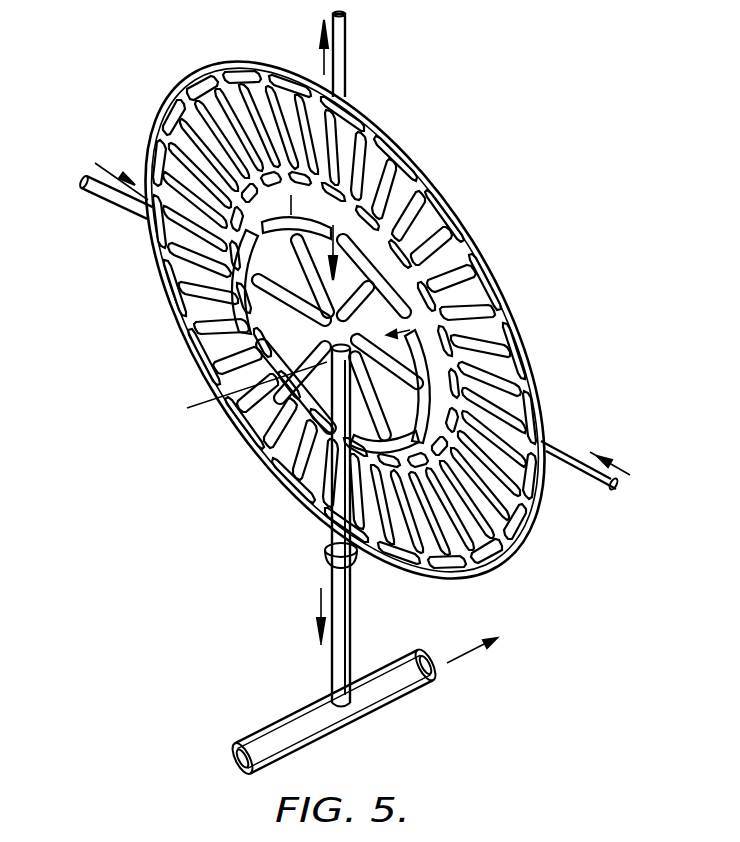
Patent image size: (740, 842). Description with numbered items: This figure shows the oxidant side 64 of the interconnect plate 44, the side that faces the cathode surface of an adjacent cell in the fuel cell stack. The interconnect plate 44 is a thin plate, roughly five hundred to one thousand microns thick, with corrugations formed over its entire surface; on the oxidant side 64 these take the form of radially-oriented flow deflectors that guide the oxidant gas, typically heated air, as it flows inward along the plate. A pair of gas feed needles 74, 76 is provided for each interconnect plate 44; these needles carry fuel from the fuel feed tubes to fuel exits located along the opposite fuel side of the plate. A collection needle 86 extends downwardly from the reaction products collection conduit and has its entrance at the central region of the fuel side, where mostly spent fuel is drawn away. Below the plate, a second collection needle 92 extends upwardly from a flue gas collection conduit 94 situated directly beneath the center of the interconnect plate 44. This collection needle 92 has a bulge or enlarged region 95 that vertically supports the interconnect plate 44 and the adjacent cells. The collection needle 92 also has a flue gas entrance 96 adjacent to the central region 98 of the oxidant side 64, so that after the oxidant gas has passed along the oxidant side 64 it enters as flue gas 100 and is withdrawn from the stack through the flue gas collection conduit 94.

The interconnect plate 44 is at (498, 250).
The oxidant side 64 is at (275, 473).
The gas feed needle 74 is at (97, 193).
The gas feed needle 76 is at (548, 440).
The collection needle 86 is at (348, 75).
The collection needle 92 is at (352, 620).
The flue gas collection conduit 94 is at (400, 694).
The enlarged region 95 is at (326, 558).
The flue gas entrance 96 is at (240, 427).
The central region 98 is at (362, 325).
The flue gas 100 is at (482, 655).